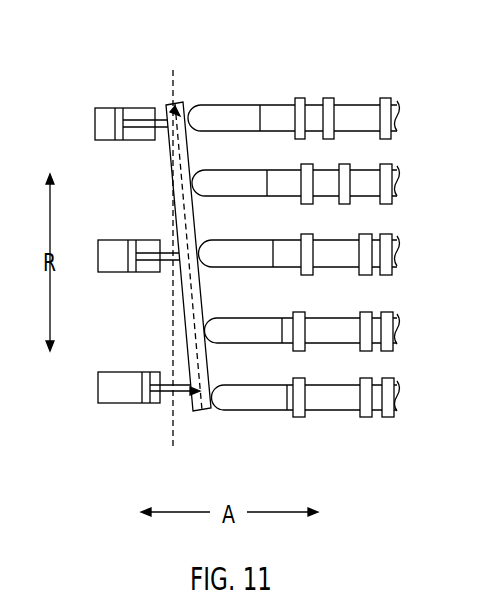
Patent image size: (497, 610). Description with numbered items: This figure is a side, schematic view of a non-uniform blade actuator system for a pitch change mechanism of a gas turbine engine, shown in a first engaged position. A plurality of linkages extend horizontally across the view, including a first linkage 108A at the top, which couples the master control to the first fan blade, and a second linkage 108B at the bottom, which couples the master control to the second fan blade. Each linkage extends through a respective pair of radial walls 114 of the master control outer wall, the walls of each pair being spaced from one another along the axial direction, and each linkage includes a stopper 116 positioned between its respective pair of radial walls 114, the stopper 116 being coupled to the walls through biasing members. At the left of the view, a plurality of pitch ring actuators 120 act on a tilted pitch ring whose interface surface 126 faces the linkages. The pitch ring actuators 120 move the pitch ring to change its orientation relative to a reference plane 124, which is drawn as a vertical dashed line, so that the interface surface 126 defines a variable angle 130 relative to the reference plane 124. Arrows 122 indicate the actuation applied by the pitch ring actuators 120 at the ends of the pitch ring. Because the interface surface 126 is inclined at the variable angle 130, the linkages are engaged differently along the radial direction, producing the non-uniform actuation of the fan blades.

The first linkage 108A is at (258, 105).
The second linkage 108B is at (263, 412).
The radial walls 114 is at (386, 98).
The stopper 116 is at (335, 126).
The pitch ring actuators 120 is at (140, 240).
The actuation direction arrows 122 is at (174, 111).
The reference plane 124 is at (173, 357).
The interface surface 126 is at (202, 226).
The variable angle 130 is at (185, 307).